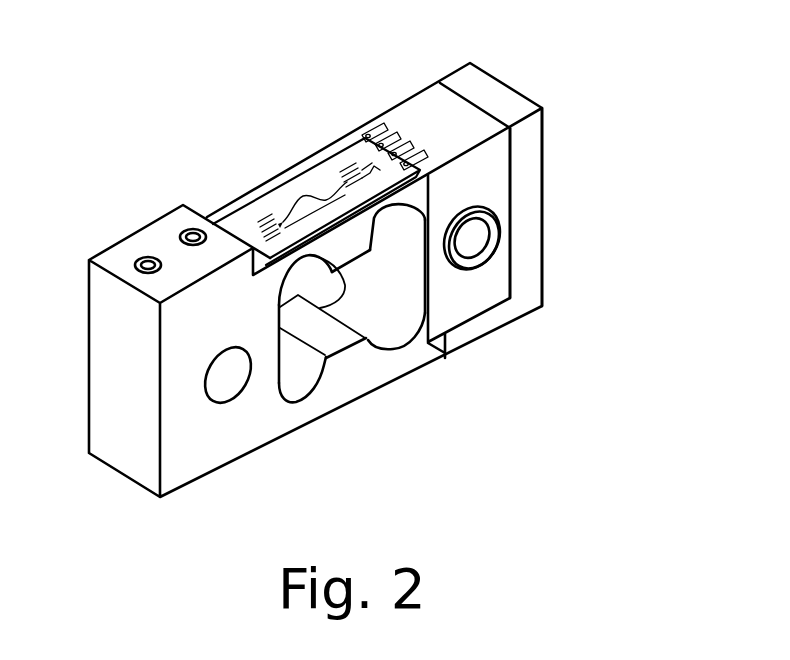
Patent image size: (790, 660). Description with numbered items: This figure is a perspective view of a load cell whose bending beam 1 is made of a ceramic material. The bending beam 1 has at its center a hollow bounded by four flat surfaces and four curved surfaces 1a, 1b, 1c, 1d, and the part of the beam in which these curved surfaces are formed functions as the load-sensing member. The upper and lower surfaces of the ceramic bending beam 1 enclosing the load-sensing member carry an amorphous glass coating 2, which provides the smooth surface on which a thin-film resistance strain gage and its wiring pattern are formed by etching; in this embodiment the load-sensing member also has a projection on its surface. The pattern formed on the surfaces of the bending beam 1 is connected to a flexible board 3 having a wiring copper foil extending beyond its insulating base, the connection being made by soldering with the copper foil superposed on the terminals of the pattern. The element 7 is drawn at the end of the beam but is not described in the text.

The load cell body (strain generating body) 1 is at (163, 233).
The thin-walled flexure portion 1a is at (307, 266).
The thin-walled flexure portion 1b is at (294, 395).
The thin-walled flexure portion 1c is at (386, 342).
The thin-walled flexure portion 1d is at (400, 211).
The strain gauge board 2 is at (247, 219).
The fixed end portion 3 is at (433, 109).
The mounting plate 7 is at (527, 252).